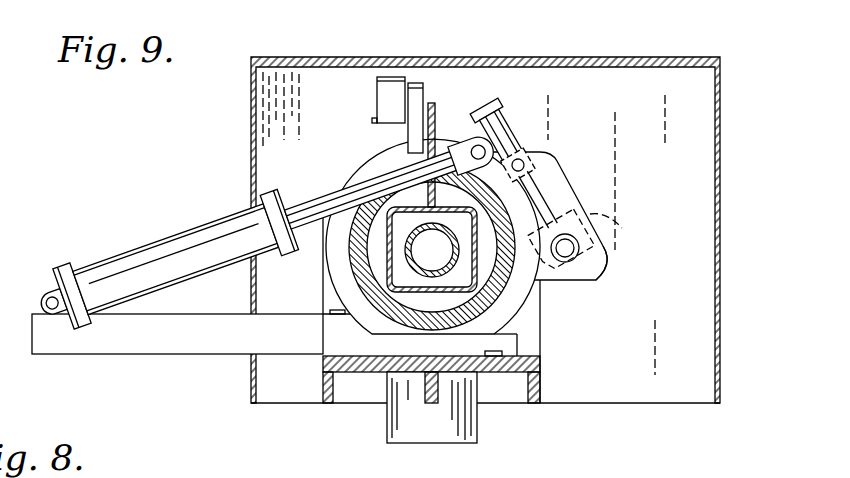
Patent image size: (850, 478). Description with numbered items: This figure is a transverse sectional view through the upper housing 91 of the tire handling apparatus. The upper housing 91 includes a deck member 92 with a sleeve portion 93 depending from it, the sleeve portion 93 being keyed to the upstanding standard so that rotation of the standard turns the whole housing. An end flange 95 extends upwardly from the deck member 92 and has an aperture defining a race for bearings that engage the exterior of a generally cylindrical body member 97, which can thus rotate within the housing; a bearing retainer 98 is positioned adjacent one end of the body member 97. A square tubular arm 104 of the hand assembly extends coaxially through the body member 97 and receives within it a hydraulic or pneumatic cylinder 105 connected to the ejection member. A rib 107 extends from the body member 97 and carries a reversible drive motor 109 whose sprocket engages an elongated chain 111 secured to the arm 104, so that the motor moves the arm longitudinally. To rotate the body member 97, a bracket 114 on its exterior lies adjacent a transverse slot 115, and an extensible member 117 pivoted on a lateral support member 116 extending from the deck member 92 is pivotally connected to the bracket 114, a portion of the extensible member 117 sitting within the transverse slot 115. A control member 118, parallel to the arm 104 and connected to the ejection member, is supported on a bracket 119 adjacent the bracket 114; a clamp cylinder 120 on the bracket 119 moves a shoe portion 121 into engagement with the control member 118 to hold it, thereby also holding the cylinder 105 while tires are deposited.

The upper housing 91 is at (721, 97).
The deck member 92 is at (540, 350).
The sleeve portion 93 is at (387, 428).
The end flange 95 is at (380, 150).
The body member 97 is at (518, 300).
The bearing retainer 98 is at (336, 285).
The arm 104 is at (389, 258).
The cylinder 105 is at (421, 268).
The rib 107 is at (420, 82).
The reversible drive motor 109 is at (377, 100).
The chain 111 is at (437, 113).
The bracket 114 is at (542, 181).
The transverse slot 115 is at (384, 182).
The lateral support member 116 is at (160, 356).
The extensible member 117 is at (184, 228).
The control member 118 is at (606, 262).
The bracket 119 is at (577, 189).
The clamp cylinder 120 is at (528, 110).
The shoe portion 121 is at (622, 230).